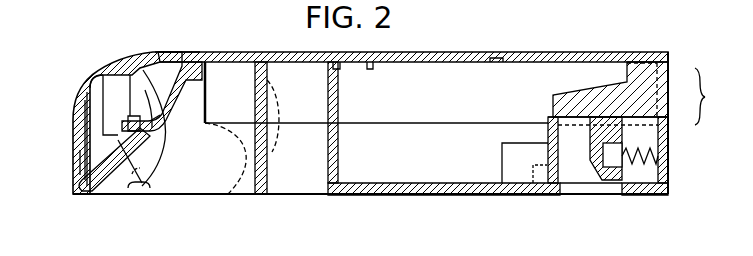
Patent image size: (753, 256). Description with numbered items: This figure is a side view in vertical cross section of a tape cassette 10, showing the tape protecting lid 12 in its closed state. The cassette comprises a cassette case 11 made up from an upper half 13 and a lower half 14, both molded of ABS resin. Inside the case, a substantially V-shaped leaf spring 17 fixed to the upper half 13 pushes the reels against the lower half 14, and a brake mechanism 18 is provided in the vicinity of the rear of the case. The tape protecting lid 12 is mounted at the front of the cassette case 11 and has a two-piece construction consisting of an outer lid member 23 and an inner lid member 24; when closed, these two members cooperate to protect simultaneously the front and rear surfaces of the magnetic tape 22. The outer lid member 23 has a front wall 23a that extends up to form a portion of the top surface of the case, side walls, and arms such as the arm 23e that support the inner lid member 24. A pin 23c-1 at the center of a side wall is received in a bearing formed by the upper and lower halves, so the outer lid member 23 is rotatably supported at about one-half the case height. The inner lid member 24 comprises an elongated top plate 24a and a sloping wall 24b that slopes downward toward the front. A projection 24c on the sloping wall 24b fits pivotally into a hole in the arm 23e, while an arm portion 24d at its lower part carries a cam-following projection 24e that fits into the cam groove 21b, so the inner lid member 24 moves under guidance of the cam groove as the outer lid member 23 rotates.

The tape cassette 10 is at (545, 30).
The cassette case 11 is at (712, 96).
The tape protecting lid 12 is at (83, 66).
The upper half 13 is at (668, 82).
The lower half 14 is at (668, 136).
The leaf spring 17 is at (400, 69).
The brake mechanism 18 is at (543, 136).
The cam groove 21b is at (160, 152).
The magnetic tape 22 is at (80, 100).
The outer lid member 23 is at (80, 133).
The front wall 23a is at (76, 165).
The pin 23c-1 is at (242, 137).
The arm 23e is at (115, 88).
The inner lid member 24 is at (183, 98).
The top plate 24a is at (178, 52).
The sloping wall 24b is at (161, 114).
The projection 24c is at (126, 119).
The arm portion 24d is at (115, 182).
The cam-following projection 24e is at (137, 184).